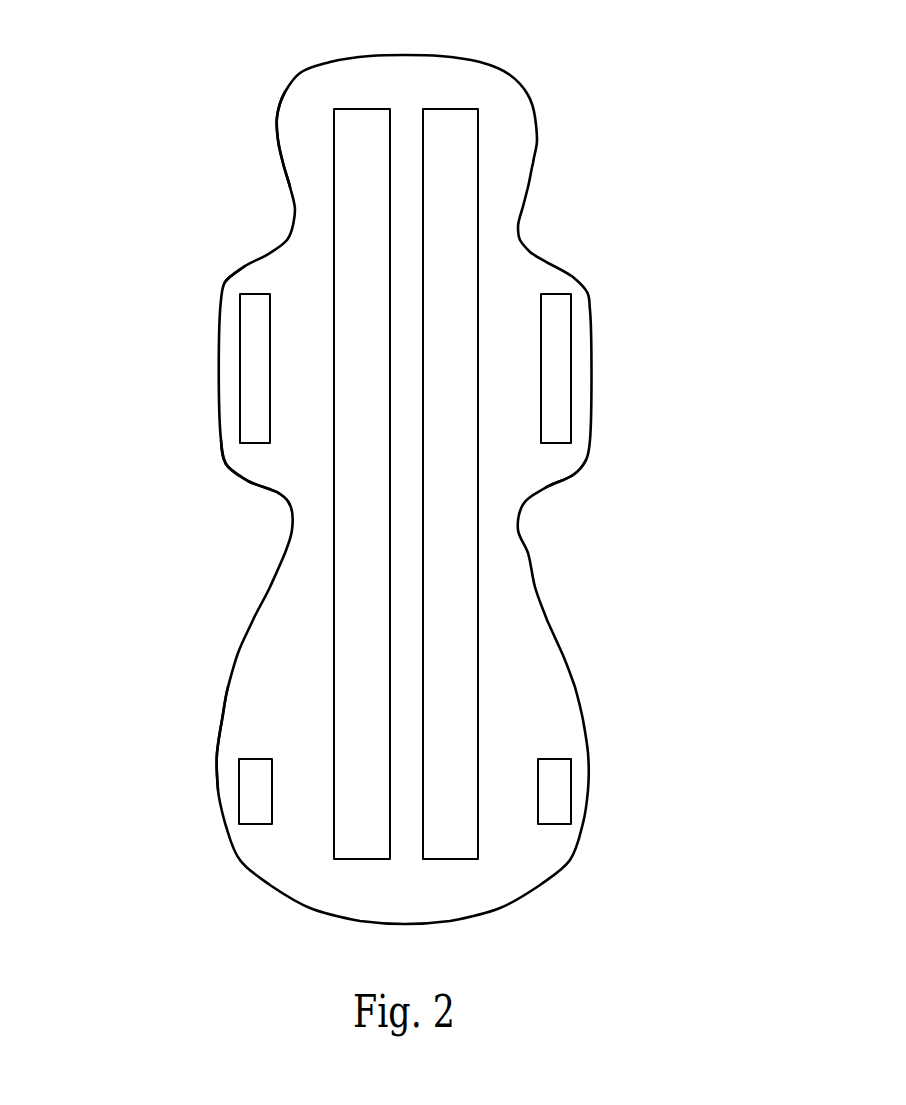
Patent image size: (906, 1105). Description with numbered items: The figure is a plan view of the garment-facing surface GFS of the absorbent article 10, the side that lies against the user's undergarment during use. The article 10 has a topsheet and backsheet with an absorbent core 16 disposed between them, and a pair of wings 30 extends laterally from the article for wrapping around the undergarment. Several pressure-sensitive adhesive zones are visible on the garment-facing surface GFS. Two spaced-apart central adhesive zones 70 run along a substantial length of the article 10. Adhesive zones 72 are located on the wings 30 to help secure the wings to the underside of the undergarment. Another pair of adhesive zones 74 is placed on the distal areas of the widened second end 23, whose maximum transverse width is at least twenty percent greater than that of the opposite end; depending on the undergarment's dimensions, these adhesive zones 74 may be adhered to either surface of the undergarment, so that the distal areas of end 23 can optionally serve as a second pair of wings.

The absorbent article 10 is at (411, 504).
The absorbent core 16 is at (518, 625).
The second end 23 is at (218, 770).
The wings 30 is at (272, 458).
The central adhesive zones 70 is at (453, 622).
The adhesive zones 72 is at (257, 373).
The adhesive zones 74 is at (256, 790).
The garment-facing surface GFS is at (298, 167).